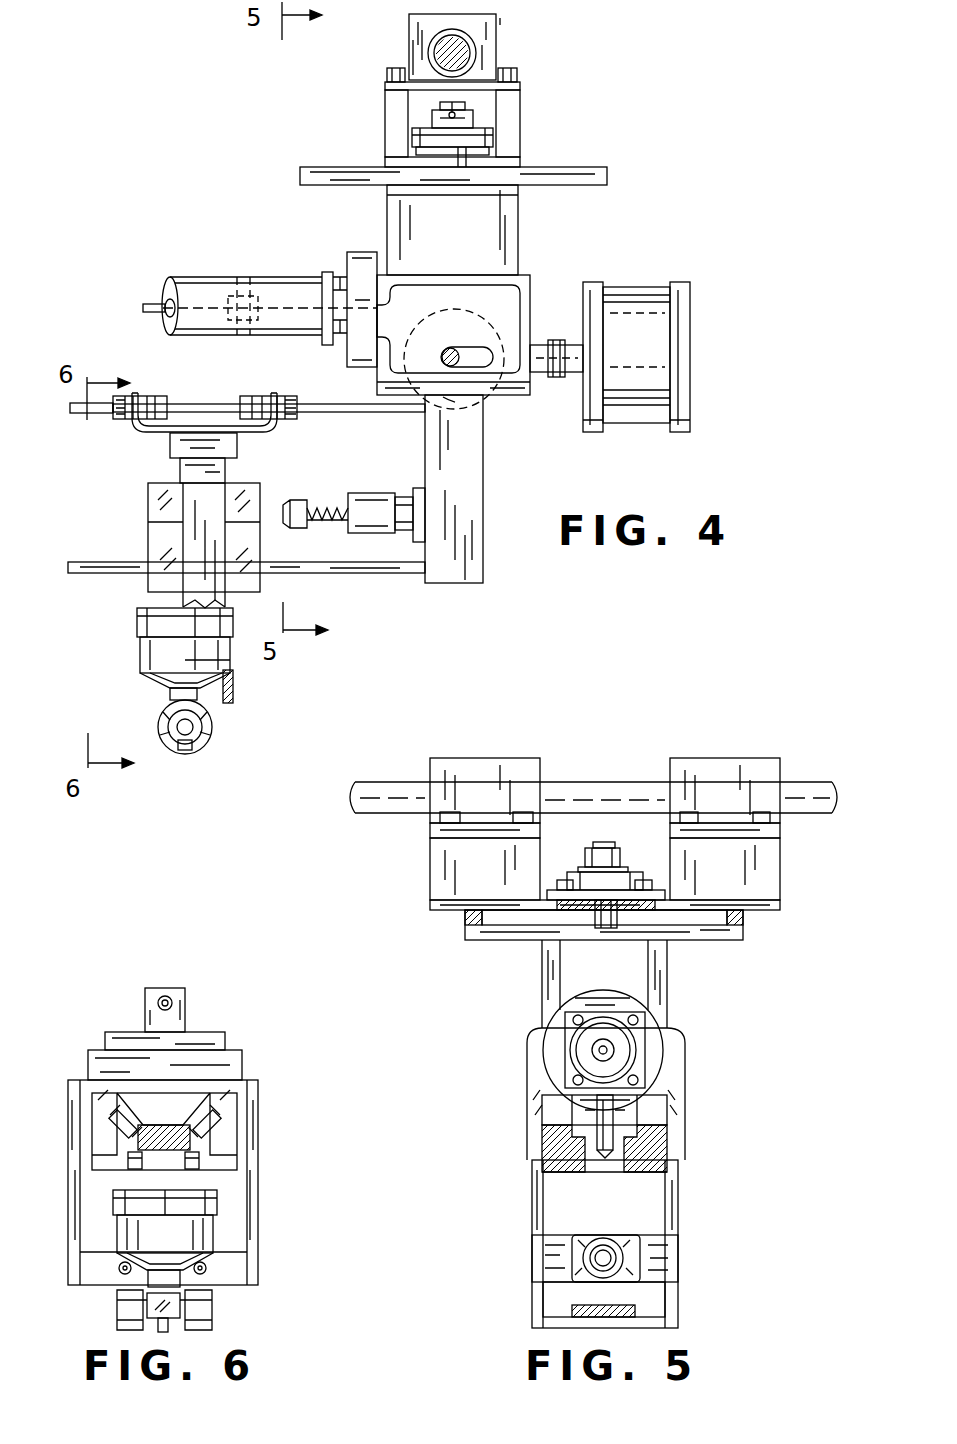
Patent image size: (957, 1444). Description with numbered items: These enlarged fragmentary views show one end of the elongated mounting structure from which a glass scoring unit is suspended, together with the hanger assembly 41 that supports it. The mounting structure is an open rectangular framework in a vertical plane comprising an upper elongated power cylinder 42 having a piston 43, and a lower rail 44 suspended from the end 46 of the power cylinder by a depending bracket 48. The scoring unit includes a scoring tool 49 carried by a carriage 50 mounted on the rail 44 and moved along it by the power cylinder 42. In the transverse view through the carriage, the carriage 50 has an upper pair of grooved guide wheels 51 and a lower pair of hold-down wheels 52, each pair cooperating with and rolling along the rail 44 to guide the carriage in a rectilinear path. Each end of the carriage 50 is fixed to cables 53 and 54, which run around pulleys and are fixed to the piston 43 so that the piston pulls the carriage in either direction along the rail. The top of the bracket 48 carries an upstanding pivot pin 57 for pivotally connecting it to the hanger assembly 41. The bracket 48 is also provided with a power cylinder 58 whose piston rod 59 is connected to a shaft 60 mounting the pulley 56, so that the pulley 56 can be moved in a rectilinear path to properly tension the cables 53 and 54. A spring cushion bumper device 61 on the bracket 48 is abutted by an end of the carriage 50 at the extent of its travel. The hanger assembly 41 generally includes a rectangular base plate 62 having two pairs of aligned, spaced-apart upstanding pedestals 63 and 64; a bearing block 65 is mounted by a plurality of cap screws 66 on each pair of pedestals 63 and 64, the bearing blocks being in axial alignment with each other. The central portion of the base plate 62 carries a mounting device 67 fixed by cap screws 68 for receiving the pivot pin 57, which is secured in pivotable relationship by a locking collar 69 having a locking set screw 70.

In FIG. 4, the hanger assembly 41 is at (503, 29).
In FIG. 5, the hanger assembly 41 is at (766, 745).
In FIG. 4, the power cylinder 42 is at (178, 290).
In FIG. 5, the power cylinder 42 is at (575, 1050).
In FIG. 4, the piston 43 is at (237, 290).
In FIG. 4, the rail 44 is at (90, 574).
In FIG. 5, the rail 44 is at (635, 1306).
In FIG. 6, the rail 44 is at (165, 1152).
In FIG. 4, the end of the power cylinder 46 is at (300, 277).
In FIG. 4, the bracket 48 is at (477, 541).
In FIG. 5, the bracket 48 is at (663, 985).
In FIG. 4, the scoring tool 49 is at (185, 752).
In FIG. 6, the scoring tool 49 is at (168, 1333).
In FIG. 4, the carriage 50 is at (140, 541).
In FIG. 6, the carriage 50 is at (270, 1088).
In FIG. 6, the grooved guide wheels 51 is at (115, 1120).
In FIG. 6, the hold-down wheels 52 is at (135, 1166).
In FIG. 4, the cable 53 is at (150, 306).
In FIG. 6, the cable 53 is at (165, 998).
In FIG. 4, the cable 54 is at (272, 305).
In FIG. 5, the cable 54 is at (603, 1152).
In FIG. 4, the pulley 56 is at (443, 405).
In FIG. 5, the pulley 56 is at (615, 1138).
In FIG. 4, the pivot pin 57 is at (462, 150).
In FIG. 5, the pivot pin 57 is at (603, 843).
In FIG. 4, the power cylinder 58 is at (683, 345).
In FIG. 5, the power cylinder 58 is at (677, 1095).
In FIG. 4, the piston rod 59 is at (553, 378).
In FIG. 4, the shaft 60 is at (452, 362).
In FIG. 4, the spring cushion bumper device 61 is at (292, 500).
In FIG. 5, the spring cushion bumper device 61 is at (612, 1261).
In FIG. 4, the base plate 62 is at (390, 160).
In FIG. 5, the base plate 62 is at (432, 909).
In FIG. 5, the pedestal 63 is at (437, 862).
In FIG. 5, the pedestal 64 is at (770, 876).
In FIG. 4, the bearing block 65 is at (415, 36).
In FIG. 5, the bearing block 65 is at (462, 766).
In FIG. 4, the cap screws 66 is at (390, 72).
In FIG. 5, the cap screws 66 is at (440, 818).
In FIG. 4, the mounting device 67 is at (495, 137).
In FIG. 5, the mounting device 67 is at (570, 880).
In FIG. 5, the cap screws 68 is at (557, 881).
In FIG. 4, the locking collar 69 is at (432, 110).
In FIG. 5, the locking collar 69 is at (620, 860).
In FIG. 4, the locking set screw 70 is at (455, 115).